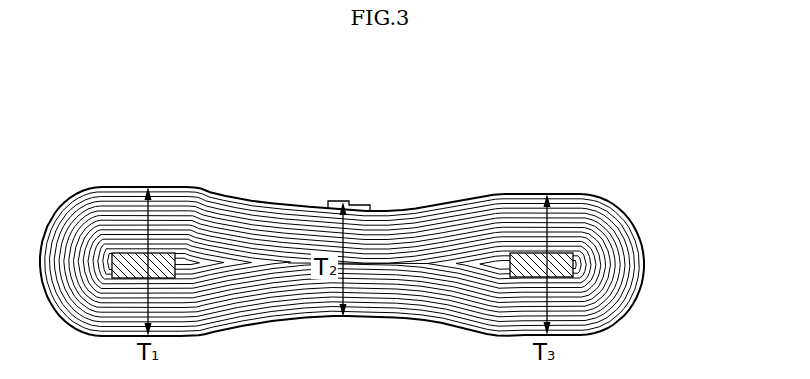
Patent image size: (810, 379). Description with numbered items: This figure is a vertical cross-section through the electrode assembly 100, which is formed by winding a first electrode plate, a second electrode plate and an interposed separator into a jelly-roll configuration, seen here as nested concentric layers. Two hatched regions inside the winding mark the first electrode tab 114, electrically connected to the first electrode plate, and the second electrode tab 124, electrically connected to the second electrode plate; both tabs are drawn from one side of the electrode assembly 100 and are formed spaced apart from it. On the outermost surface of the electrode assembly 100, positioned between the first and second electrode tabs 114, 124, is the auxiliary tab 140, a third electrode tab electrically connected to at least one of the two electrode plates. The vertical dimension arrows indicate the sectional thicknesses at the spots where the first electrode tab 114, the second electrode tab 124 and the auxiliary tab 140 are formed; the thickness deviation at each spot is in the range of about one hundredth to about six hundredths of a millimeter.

The electrode assembly 100 is at (680, 158).
The first electrode tab 114 is at (164, 253).
The second electrode tab 124 is at (563, 253).
The auxiliary tab 140 is at (360, 203).